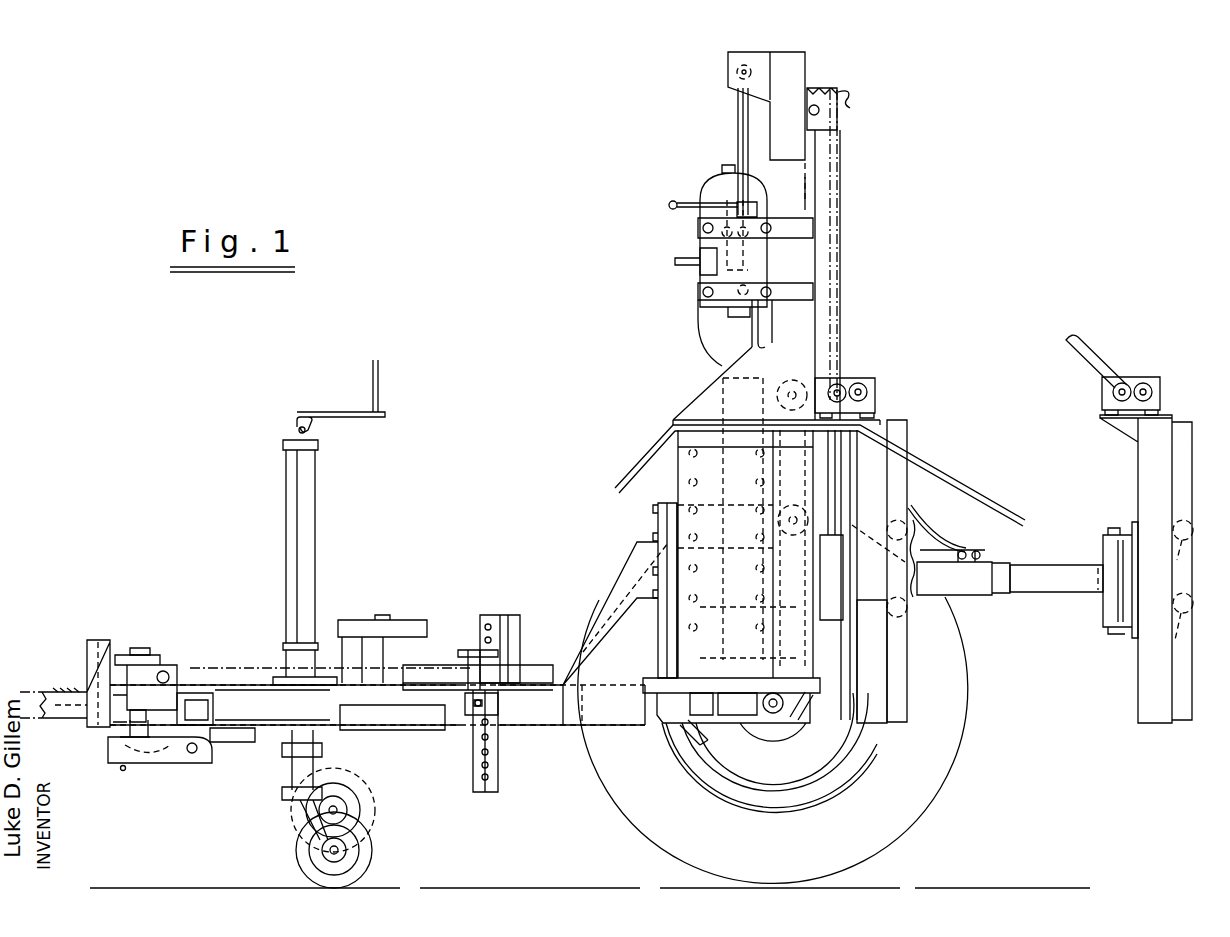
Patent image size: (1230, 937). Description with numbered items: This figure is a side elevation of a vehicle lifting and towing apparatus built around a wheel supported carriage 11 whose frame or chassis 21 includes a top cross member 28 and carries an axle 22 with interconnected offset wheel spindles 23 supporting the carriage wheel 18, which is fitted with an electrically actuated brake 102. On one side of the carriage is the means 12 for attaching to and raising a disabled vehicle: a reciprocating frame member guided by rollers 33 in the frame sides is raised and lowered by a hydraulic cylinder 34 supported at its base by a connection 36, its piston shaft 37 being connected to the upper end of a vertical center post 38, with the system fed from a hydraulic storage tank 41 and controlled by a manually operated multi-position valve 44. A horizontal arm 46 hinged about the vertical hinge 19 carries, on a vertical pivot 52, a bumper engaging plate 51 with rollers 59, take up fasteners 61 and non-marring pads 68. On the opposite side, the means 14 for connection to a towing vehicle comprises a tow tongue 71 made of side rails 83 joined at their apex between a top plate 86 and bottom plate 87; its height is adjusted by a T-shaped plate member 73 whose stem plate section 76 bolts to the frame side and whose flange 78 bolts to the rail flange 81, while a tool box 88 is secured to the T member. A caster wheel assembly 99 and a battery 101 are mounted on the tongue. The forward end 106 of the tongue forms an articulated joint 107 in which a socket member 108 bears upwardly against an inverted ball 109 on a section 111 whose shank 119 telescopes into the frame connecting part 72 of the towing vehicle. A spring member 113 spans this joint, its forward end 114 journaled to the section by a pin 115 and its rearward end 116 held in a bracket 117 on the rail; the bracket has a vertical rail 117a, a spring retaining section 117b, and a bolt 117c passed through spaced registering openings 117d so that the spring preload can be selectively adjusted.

The wheel supported carriage 11 is at (868, 322).
The means for attachment to and raising of a disabled vehicle 12 is at (888, 415).
The means for connection to a towing vehicle 14 is at (222, 605).
The carriage wheel 18 is at (965, 710).
The vertical hinge 19 is at (845, 528).
The frame or chassis 21 is at (665, 493).
The axle 22 is at (702, 733).
The offset wheel spindles 23 is at (775, 714).
The top cross member 28 is at (827, 85).
The rollers 33 is at (793, 412).
The hydraulic cylinder 34 is at (732, 332).
The connection 36 is at (742, 608).
The piston shaft 37 is at (742, 115).
The vertical center post 38 is at (805, 63).
The hydraulic storage tank 41 is at (707, 333).
The manually controlled multi-position valve 44 is at (720, 250).
The arm 46 is at (980, 592).
The bumper engaging plate 51 is at (888, 733).
The vertical pivot 52 is at (1113, 528).
The rollers 59 is at (1178, 560).
The take up fasteners 61 is at (1142, 368).
The pads 68 is at (900, 687).
The tow tongue 71 is at (450, 770).
The frame connecting part of the towing vehicle 72 is at (42, 688).
The T-shaped plate member 73 is at (658, 503).
The stem plate section 76 is at (737, 500).
The flange 78 is at (665, 627).
The flange 81 is at (662, 650).
The side rail 83 is at (553, 725).
The top plate 86 is at (243, 683).
The bottom plate 87 is at (258, 742).
The tool box 88 is at (677, 472).
The caster wheel assembly 99 is at (377, 802).
The battery 101 is at (428, 648).
The brake 102 is at (733, 785).
The forward end of the tongue 106 is at (158, 765).
The articulated joint 107 is at (123, 770).
The socket member 108 is at (142, 767).
The inverted ball 109 is at (156, 790).
The section 111 is at (97, 637).
The spring member 113 is at (225, 660).
The forward end of the spring member 114 is at (137, 650).
The pin 115 is at (143, 675).
The rearward end of the spring member 116 is at (530, 662).
The bracket 117 is at (497, 607).
The vertical rail 117a is at (518, 640).
The spring retaining section 117b is at (502, 707).
The bolt 117c is at (473, 715).
The spaced registering openings 117d is at (488, 624).
The shank 119 is at (68, 707).